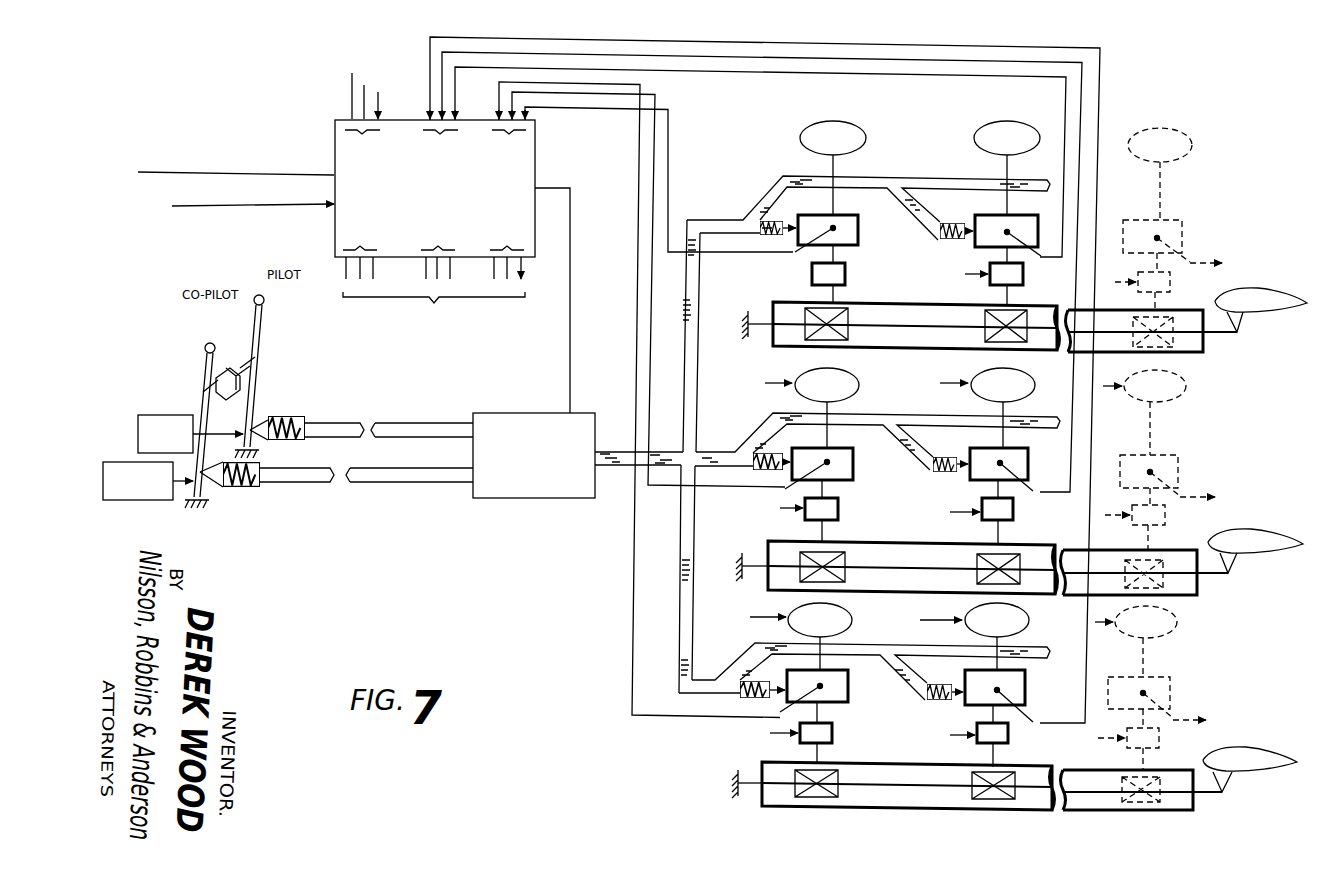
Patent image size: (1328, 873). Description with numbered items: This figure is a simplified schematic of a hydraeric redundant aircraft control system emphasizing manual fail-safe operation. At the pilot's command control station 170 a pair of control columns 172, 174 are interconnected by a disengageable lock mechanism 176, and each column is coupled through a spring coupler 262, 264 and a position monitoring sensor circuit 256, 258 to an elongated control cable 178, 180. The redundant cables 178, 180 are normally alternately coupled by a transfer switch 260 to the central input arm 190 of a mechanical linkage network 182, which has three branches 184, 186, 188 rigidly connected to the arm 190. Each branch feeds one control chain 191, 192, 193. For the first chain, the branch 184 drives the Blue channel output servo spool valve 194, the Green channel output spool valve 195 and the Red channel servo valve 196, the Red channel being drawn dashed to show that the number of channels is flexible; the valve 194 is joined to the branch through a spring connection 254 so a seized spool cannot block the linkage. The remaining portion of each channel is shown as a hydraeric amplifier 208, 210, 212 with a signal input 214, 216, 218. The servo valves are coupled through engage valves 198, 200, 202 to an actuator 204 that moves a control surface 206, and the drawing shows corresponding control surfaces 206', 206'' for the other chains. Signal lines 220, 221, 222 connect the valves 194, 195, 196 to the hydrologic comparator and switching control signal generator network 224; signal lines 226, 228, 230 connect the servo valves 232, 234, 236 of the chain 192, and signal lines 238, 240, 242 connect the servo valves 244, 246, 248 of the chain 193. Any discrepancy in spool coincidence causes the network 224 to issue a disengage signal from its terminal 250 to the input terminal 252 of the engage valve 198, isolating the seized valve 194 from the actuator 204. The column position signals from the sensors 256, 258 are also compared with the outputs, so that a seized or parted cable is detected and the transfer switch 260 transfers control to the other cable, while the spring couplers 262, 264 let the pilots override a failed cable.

The pilot's command control station 170 is at (212, 503).
The control column 172 is at (262, 323).
The control column 174 is at (206, 368).
The disengageable lock mechanism 176 is at (228, 365).
The elongated control cable 178 is at (397, 423).
The elongated control cable 180 is at (380, 483).
The mechanical linkage network 182 is at (704, 426).
The linkage branch 184 is at (752, 204).
The linkage branch 186 is at (715, 448).
The linkage branch 188 is at (741, 672).
The central input arm 190 is at (662, 437).
The control chain 191 is at (705, 146).
The control chain 192 is at (746, 405).
The control chain 193 is at (731, 617).
The Blue channel output servo spool valve 194 is at (872, 235).
The Green channel output spool valve 195 is at (985, 255).
The Red channel servo valve 196 is at (1186, 227).
The engage valve 198 is at (846, 275).
The engage valve 200 is at (990, 288).
The engage valve 202 is at (1170, 283).
The actuator 204 is at (926, 348).
The control surface 206 is at (1261, 298).
The second control surface 206' is at (1255, 541).
The third control surface 206'' is at (1250, 760).
The hydraeric amplifier 208 is at (844, 121).
The hydraeric amplifier 210 is at (1022, 122).
The hydraeric amplifier 212 is at (1170, 126).
The signal input 214 is at (798, 138).
The signal input 216 is at (972, 140).
The signal input 218 is at (1126, 145).
The signal line 220 is at (767, 258).
The signal line 221 is at (1040, 262).
The signal line 222 is at (1196, 262).
The hydrologic comparator and switching control signal generator network 224 is at (450, 225).
The signal line 226 is at (758, 489).
The signal line 228 is at (1048, 494).
The signal line 230 is at (1185, 494).
The servo valve 232 is at (852, 474).
The servo valve 234 is at (1027, 470).
The servo valve 236 is at (1178, 460).
The signal line 238 is at (748, 726).
The signal line 240 is at (1045, 724).
The signal line 242 is at (1177, 720).
The servo valve 244 is at (850, 699).
The servo valve 246 is at (1026, 691).
The servo valve 248 is at (1172, 685).
The disengage signal terminal 250 is at (494, 270).
The input terminal 252 is at (811, 275).
The spring connection 254 is at (769, 237).
The position monitoring sensor circuit 256 is at (178, 414).
The position monitoring sensor circuit 258 is at (159, 501).
The transfer switch 260 is at (543, 496).
The spring coupler 262 is at (305, 417).
The spring coupler 264 is at (262, 483).